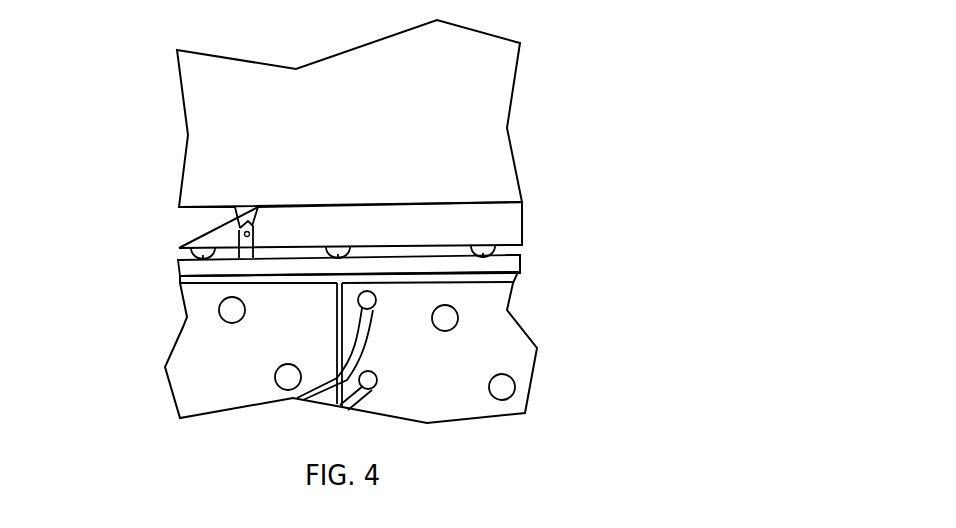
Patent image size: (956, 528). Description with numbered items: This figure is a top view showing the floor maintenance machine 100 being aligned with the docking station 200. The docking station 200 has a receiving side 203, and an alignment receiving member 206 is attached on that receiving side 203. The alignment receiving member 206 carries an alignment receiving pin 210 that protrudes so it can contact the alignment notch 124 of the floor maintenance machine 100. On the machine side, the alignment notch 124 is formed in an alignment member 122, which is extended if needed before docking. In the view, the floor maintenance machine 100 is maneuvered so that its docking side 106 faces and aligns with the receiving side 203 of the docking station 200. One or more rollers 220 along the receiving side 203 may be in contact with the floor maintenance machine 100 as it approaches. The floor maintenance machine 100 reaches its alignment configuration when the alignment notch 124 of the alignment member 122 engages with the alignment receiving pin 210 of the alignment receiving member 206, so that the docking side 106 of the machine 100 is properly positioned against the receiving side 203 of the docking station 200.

The floor maintenance machine 100 is at (471, 371).
The docking side 106 is at (182, 257).
The alignment member 122 is at (229, 258).
The alignment notch 124 is at (247, 238).
The docking station 200 is at (378, 128).
The receiving side 203 is at (513, 257).
The alignment receiving member 206 is at (226, 218).
The alignment receiving pin 210 is at (245, 230).
The rollers 220 is at (347, 248).